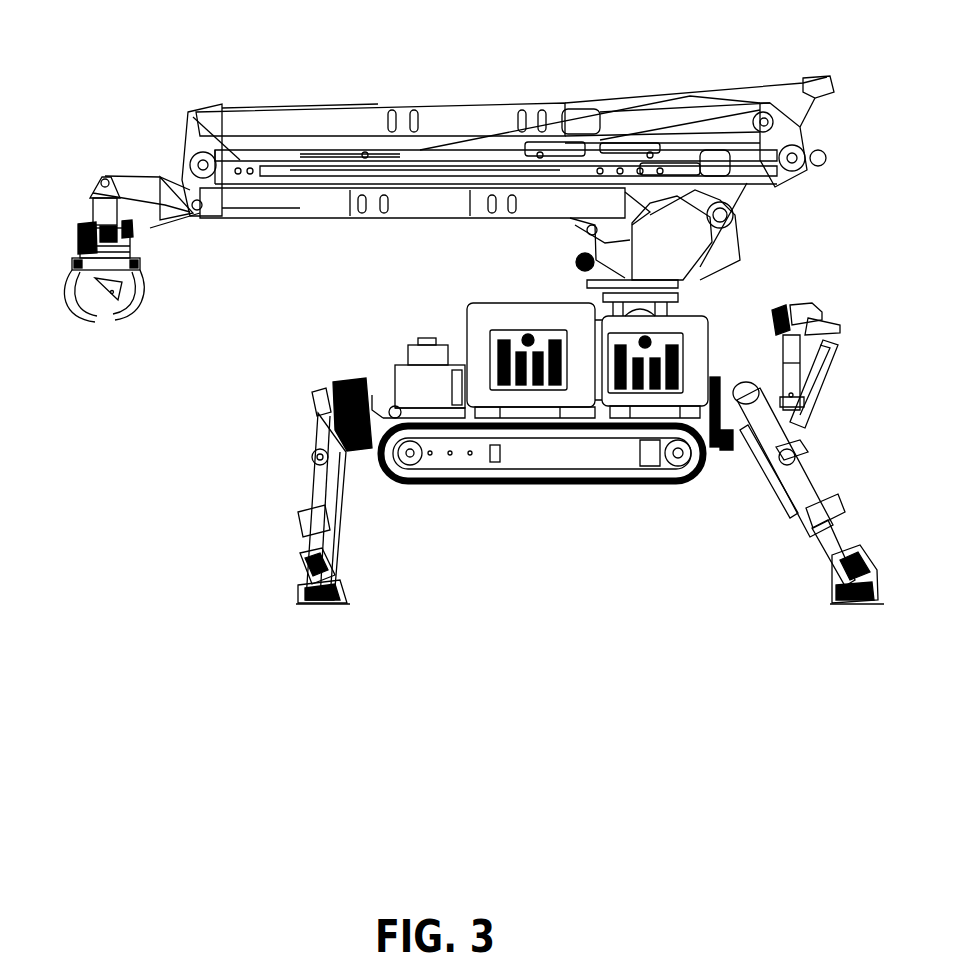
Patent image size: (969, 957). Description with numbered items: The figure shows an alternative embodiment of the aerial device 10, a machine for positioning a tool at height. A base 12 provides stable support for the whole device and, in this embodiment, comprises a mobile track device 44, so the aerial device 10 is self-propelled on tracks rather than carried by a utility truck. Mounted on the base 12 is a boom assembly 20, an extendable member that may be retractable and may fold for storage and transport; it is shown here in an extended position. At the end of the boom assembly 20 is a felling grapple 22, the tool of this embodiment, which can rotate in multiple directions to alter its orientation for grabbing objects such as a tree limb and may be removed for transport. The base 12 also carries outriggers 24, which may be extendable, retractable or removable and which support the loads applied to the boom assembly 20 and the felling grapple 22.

The aerial device 10 is at (153, 62).
The base 12 is at (252, 463).
The boom assembly 20 is at (541, 70).
The felling grapple 22 is at (70, 260).
The outriggers 24 is at (357, 522).
The mobile track device 44 is at (597, 497).